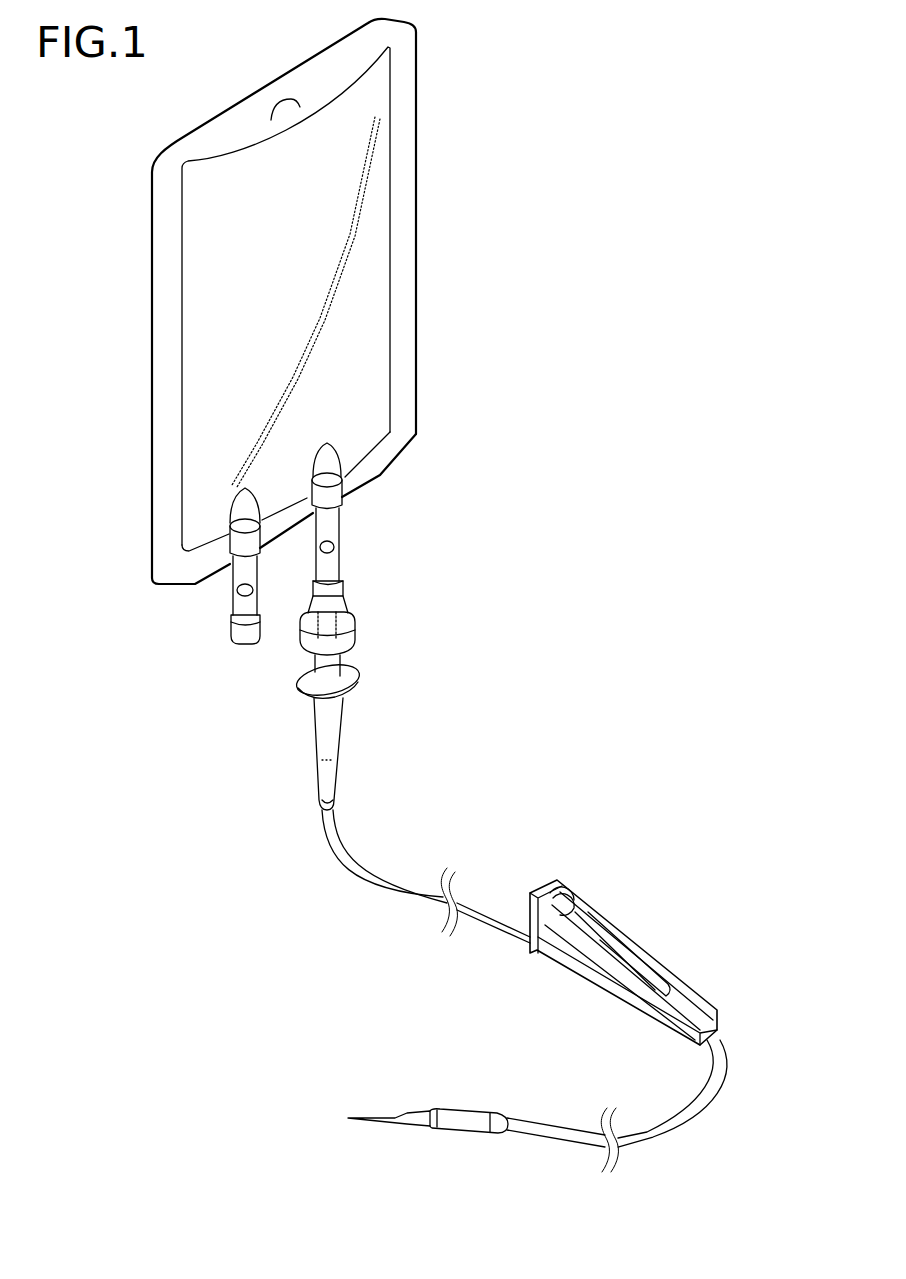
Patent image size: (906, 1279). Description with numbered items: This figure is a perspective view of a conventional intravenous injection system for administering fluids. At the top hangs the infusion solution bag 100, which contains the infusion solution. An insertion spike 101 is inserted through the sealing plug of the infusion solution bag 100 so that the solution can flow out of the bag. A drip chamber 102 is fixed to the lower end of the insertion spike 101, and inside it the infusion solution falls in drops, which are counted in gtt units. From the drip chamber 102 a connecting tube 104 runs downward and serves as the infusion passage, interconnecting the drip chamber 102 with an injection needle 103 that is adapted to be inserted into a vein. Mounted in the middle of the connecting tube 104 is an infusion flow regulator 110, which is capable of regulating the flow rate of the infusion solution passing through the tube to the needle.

The infusion solution bag 100 is at (374, 285).
The insertion spike 101 is at (331, 667).
The drip chamber 102 is at (334, 714).
The infusion flow regulator 110 is at (617, 932).
The connecting tube 104 is at (680, 1128).
The injection needle 103 is at (363, 1115).